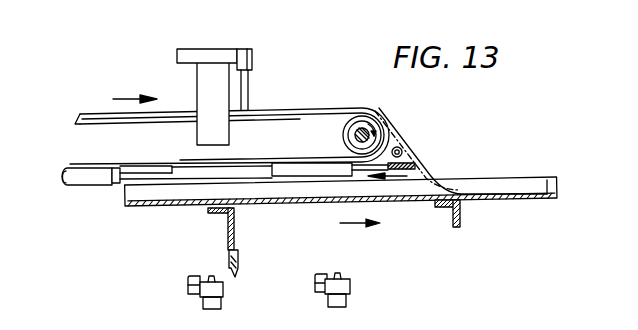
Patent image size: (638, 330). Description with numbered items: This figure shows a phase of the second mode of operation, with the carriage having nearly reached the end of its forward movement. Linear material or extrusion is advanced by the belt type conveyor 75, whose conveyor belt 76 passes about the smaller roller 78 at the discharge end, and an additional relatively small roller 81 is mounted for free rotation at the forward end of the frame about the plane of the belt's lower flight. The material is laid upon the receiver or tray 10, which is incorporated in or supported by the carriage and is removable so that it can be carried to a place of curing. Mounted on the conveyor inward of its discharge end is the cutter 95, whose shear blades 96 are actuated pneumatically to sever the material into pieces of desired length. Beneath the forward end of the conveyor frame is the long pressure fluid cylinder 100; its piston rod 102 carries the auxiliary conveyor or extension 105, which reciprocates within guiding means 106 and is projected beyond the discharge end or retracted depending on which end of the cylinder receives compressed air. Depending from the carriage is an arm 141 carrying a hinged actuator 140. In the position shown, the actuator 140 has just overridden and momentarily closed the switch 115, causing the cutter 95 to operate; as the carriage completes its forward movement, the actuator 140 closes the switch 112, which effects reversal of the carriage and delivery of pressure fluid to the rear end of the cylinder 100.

The receiver or tray 10 is at (504, 183).
The belt type conveyor 75 is at (277, 134).
The conveyor belt 76 is at (82, 117).
The smaller roller 78 is at (360, 123).
The additional relatively small roller 81 is at (402, 148).
The cutter 95 is at (232, 49).
The shear blades 96 is at (250, 84).
The pressure fluid cylinder 100 is at (78, 184).
The piston rod 102 is at (131, 177).
The auxiliary conveyor or extension 105 is at (252, 168).
The guiding means 106 is at (283, 165).
The switch 112 is at (345, 287).
The switch 115 is at (218, 292).
The hinged actuator 140 is at (240, 268).
The arm 141 is at (235, 236).